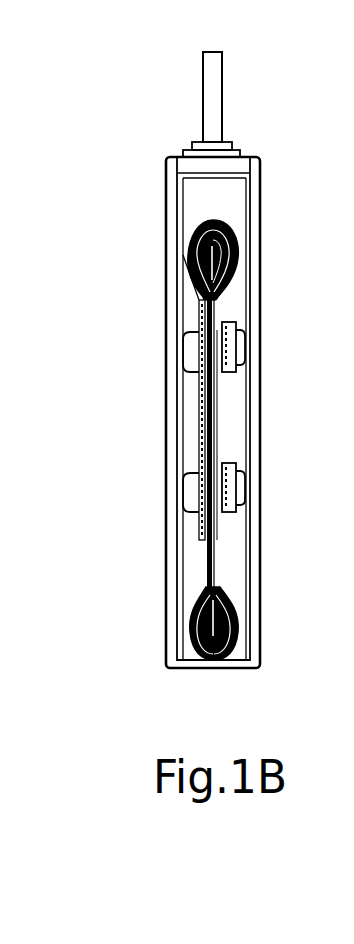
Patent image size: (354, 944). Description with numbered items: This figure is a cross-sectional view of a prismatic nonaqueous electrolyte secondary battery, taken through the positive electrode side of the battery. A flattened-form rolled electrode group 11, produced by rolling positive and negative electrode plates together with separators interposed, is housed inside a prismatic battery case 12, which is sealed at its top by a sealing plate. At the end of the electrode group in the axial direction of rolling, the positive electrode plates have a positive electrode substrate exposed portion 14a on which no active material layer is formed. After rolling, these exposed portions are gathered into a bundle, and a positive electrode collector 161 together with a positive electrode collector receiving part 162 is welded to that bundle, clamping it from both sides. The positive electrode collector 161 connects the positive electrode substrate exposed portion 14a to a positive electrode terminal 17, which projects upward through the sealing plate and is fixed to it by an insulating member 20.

The flattened-form rolled electrode group 11 is at (228, 408).
The prismatic battery case 12 is at (252, 565).
The positive electrode substrate exposed portion 14a is at (213, 565).
The positive electrode collector 161 is at (202, 422).
The positive electrode collector receiving part 162 is at (240, 342).
The positive electrode terminal 17 is at (213, 80).
The insulating member 20 is at (185, 153).